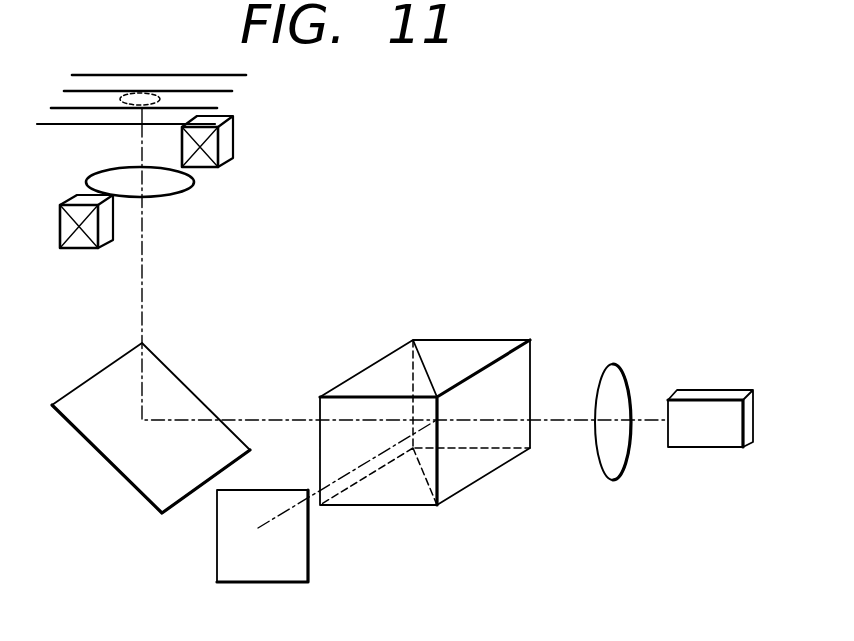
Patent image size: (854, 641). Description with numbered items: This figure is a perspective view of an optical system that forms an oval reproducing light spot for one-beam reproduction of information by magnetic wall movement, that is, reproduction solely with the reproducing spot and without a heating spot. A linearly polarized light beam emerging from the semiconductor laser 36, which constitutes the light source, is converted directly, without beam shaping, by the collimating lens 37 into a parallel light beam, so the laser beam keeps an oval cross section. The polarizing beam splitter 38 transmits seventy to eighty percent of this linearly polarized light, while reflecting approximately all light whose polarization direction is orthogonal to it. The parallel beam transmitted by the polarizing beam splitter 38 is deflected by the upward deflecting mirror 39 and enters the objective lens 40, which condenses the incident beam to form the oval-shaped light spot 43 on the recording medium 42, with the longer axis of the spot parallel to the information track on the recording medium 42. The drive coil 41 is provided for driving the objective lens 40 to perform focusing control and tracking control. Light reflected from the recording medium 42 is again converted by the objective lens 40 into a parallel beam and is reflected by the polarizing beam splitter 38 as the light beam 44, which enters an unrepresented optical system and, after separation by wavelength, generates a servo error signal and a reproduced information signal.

The semiconductor laser 36 is at (702, 395).
The collimating lens 37 is at (613, 363).
The polarizing beam splitter 38 is at (482, 352).
The upward deflecting mirror 39 is at (112, 445).
The objective lens 40 is at (187, 192).
The drive coil 41 is at (232, 162).
The recording medium 42 is at (218, 102).
The oval-shaped light spot 43 is at (137, 93).
The light beam 44 is at (287, 572).